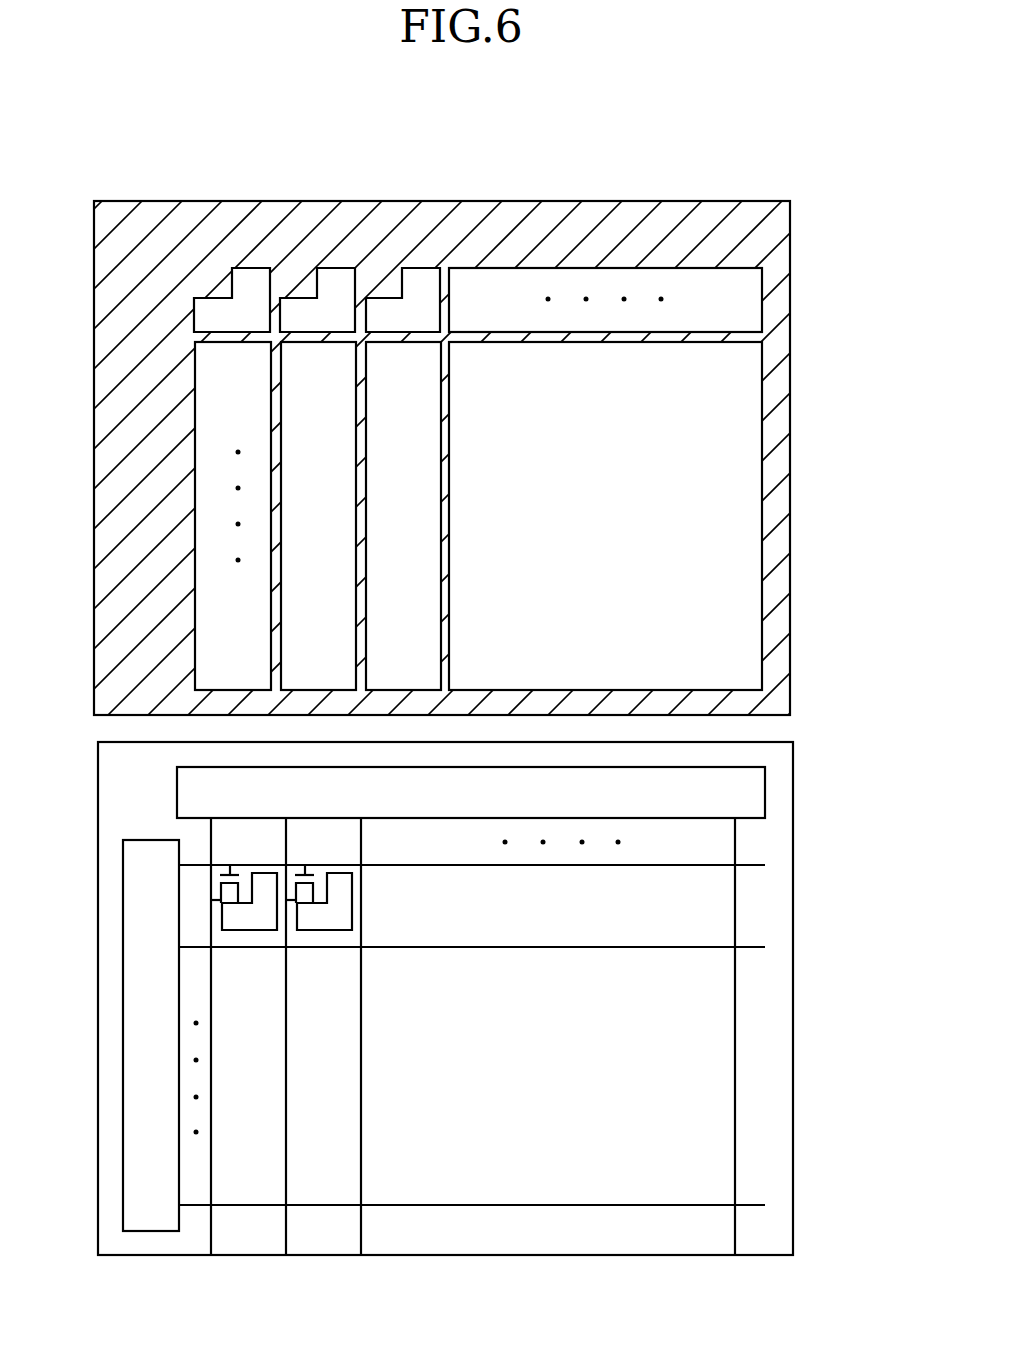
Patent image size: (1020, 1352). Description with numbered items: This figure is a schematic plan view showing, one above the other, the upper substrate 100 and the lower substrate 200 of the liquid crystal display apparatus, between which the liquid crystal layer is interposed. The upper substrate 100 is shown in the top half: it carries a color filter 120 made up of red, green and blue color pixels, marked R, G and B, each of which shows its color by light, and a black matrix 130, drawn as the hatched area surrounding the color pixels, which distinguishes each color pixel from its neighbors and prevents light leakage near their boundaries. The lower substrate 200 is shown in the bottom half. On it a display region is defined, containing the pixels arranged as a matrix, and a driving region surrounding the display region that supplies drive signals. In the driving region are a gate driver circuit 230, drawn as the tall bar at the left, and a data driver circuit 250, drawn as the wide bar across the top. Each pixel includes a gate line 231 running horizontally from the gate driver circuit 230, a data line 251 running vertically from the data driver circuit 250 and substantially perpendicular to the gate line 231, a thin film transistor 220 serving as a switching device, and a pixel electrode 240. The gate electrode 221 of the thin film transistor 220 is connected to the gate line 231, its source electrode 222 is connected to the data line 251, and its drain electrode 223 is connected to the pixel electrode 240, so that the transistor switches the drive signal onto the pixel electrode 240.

The upper substrate 100 is at (795, 404).
The color filter 120 is at (335, 288).
The black matrix 130 is at (240, 218).
The lower substrate 200 is at (797, 882).
The thin film transistor 220 is at (247, 874).
The gate electrode 221 is at (308, 872).
The source electrode 222 is at (290, 898).
The drain electrode 223 is at (312, 896).
The gate driver circuit 230 is at (123, 900).
The gate line 231 is at (561, 868).
The pixel electrode 240 is at (345, 877).
The data driver circuit 250 is at (177, 790).
The data line 251 is at (214, 1237).